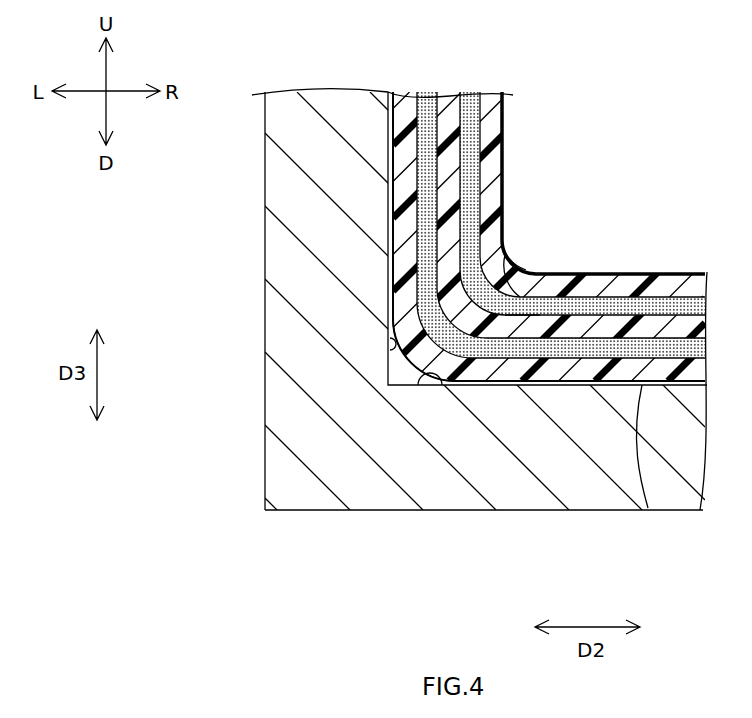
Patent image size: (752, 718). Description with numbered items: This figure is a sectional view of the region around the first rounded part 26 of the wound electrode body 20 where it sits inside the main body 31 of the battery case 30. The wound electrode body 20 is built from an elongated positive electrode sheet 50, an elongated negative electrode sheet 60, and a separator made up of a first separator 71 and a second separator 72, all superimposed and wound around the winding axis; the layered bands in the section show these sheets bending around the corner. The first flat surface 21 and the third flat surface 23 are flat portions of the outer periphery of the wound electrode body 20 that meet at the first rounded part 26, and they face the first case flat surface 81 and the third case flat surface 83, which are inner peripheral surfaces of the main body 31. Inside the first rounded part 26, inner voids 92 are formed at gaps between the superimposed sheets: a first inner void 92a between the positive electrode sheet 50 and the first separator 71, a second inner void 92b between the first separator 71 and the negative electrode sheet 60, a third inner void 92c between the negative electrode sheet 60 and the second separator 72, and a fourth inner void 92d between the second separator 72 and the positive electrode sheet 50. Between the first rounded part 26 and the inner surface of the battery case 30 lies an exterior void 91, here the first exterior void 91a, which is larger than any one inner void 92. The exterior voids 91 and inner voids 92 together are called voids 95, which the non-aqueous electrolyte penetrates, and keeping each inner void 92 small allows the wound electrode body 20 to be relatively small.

The wound electrode body 20 is at (696, 270).
The first flat surface 21 is at (393, 216).
The third flat surface 23 is at (648, 508).
The first rounded part 26 is at (400, 372).
The battery case 30 is at (602, 524).
The main body 31 is at (273, 302).
The positive electrode sheet 50 is at (470, 98).
The negative electrode sheet 60 is at (425, 97).
The first separator 71 is at (446, 97).
The second separator 72 is at (405, 99).
The first case flat surface 81 is at (393, 354).
The third case flat surface 83 is at (419, 386).
The exterior void 91 is at (287, 398).
The first exterior void 91a is at (287, 398).
The inner voids 92 is at (624, 120).
The first inner void 92a is at (520, 288).
The second inner void 92b is at (508, 262).
The third inner void 92c is at (505, 235).
The fourth inner void 92d is at (548, 290).
The voids 95 is at (397, 363).